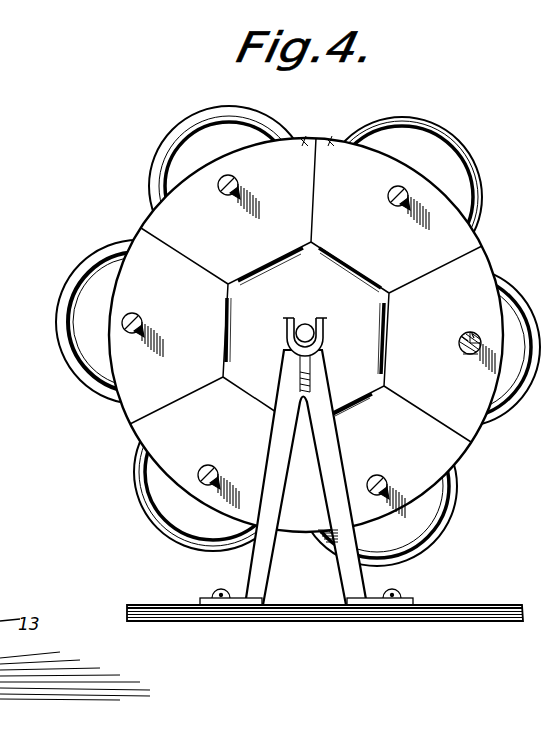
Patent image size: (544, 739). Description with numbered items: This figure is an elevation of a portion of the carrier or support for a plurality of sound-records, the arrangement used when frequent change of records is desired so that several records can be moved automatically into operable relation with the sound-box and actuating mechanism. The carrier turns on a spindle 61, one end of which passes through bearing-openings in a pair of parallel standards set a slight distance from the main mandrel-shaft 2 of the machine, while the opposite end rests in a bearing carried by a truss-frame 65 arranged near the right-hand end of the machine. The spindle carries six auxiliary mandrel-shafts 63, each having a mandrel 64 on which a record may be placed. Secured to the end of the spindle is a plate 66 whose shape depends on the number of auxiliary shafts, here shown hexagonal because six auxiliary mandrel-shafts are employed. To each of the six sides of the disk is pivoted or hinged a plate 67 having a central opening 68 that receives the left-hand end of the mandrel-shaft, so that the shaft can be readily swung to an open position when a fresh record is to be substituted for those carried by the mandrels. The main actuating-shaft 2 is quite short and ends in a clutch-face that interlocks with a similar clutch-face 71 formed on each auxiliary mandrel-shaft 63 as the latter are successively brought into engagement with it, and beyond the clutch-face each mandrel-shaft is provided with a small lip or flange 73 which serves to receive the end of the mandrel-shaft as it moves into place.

The spindle 61 is at (294, 333).
The auxiliary mandrel-shaft 63 is at (225, 191).
The mandrel 64 is at (178, 166).
The truss-frame 65 is at (274, 447).
The plate 66 is at (355, 314).
The plate 67 is at (305, 144).
The central opening 68 is at (138, 329).
The clutch-face 71 is at (459, 348).
The lip or flange 73 is at (454, 322).
The mandrel-shaft 2 is at (472, 332).